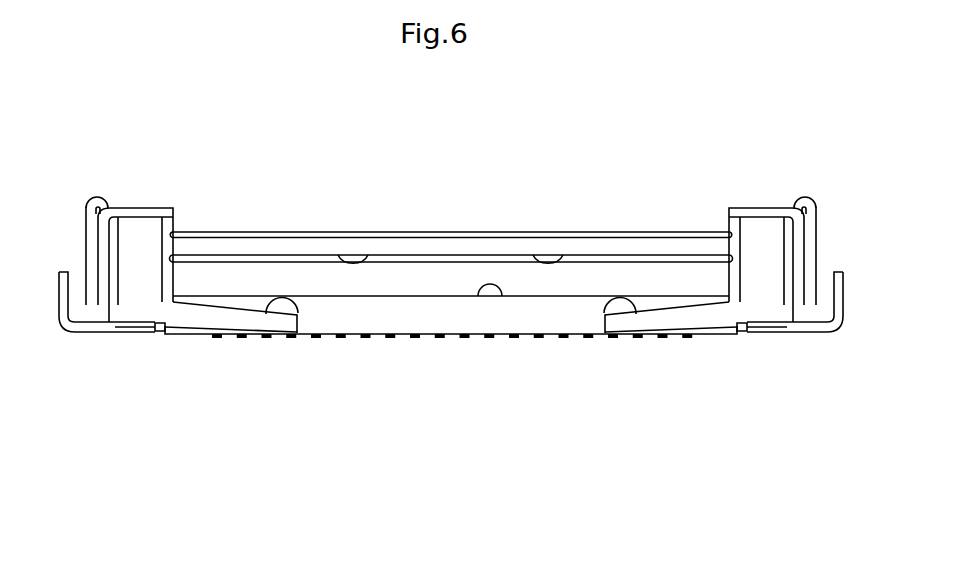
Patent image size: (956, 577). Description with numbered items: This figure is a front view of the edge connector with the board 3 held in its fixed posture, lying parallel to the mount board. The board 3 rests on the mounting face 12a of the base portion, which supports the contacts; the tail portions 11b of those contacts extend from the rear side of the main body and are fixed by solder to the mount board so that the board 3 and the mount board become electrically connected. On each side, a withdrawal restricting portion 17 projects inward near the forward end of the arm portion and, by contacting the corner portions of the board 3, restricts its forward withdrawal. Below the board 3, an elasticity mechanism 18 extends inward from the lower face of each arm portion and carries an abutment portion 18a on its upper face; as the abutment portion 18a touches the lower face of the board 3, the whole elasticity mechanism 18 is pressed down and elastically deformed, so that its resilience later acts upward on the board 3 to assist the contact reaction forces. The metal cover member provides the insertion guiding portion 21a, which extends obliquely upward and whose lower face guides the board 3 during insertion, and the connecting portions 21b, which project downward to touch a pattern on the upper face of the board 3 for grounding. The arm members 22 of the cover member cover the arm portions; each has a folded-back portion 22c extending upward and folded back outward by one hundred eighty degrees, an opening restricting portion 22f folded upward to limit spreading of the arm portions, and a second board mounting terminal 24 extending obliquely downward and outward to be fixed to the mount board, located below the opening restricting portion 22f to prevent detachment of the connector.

The board 3 is at (455, 285).
The tail portion 11b is at (387, 340).
The mounting face 12a is at (500, 298).
The withdrawal restricting portion 17 is at (147, 232).
The elasticity mechanism 18 is at (198, 331).
The abutment portion 18a is at (281, 305).
The insertion guiding portion 21a is at (301, 231).
The connecting portion 21b is at (353, 256).
The arm member 22 is at (88, 233).
The folded-back portion 22c is at (106, 204).
The opening restricting portion 22f is at (58, 305).
The second board mounting terminal 24 is at (92, 336).